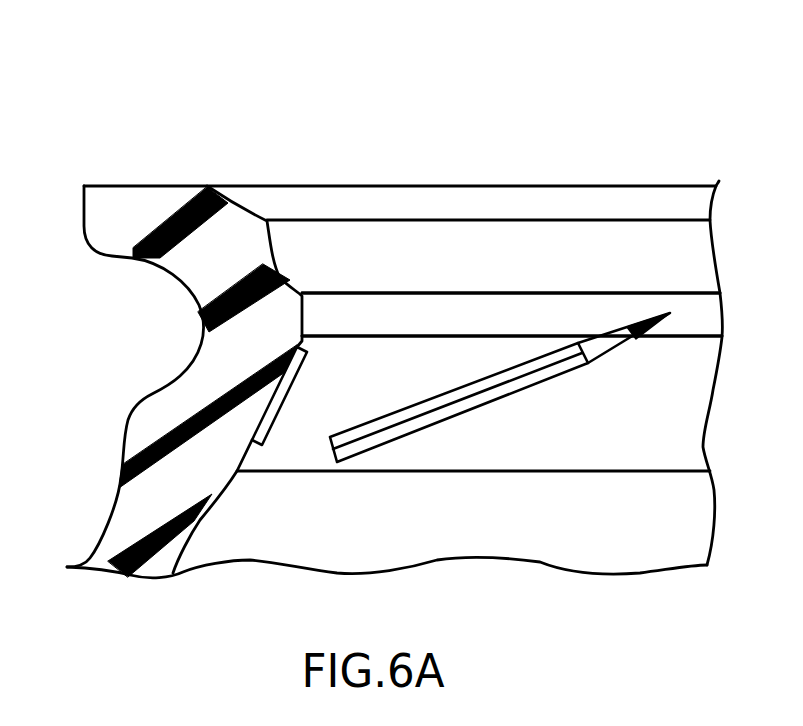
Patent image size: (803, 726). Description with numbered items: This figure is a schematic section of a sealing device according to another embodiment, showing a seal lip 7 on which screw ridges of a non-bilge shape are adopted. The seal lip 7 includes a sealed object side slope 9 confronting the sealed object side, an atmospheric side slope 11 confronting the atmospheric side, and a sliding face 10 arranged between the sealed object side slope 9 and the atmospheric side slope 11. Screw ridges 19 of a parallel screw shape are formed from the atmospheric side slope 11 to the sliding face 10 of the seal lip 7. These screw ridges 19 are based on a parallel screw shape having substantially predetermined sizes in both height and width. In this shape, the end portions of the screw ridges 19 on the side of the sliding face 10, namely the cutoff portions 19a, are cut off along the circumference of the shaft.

The seal lip 7 is at (113, 145).
The sealed object side slope 9 is at (332, 272).
The sliding face 10 is at (620, 300).
The atmospheric side slope 11 is at (570, 430).
The screw ridges 19 is at (273, 408).
The cutoff portions 19a is at (303, 330).